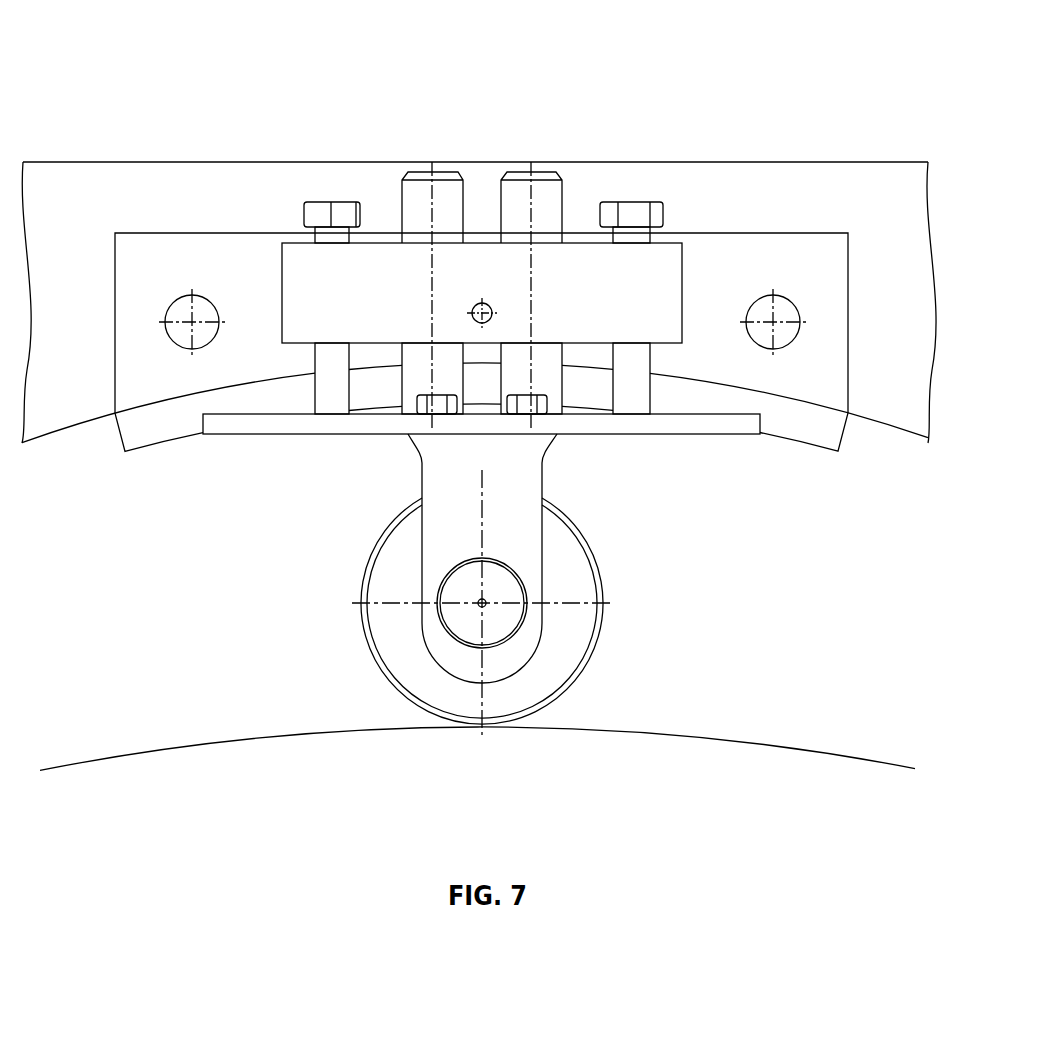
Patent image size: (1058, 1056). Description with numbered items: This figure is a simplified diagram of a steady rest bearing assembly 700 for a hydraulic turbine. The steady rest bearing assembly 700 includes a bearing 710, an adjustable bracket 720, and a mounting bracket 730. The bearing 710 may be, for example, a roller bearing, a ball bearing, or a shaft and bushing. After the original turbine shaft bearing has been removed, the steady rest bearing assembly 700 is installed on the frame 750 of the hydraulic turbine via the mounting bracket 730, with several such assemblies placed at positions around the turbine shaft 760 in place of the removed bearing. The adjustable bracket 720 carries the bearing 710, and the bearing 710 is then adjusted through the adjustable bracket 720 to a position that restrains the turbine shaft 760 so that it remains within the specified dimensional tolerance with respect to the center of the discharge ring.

The steady rest bearing assembly 700 is at (175, 110).
The bearing 710 is at (372, 567).
The adjustable bracket 720 is at (671, 253).
The mounting bracket 730 is at (152, 244).
The frame 750 is at (796, 182).
The turbine shaft 760 is at (235, 730).